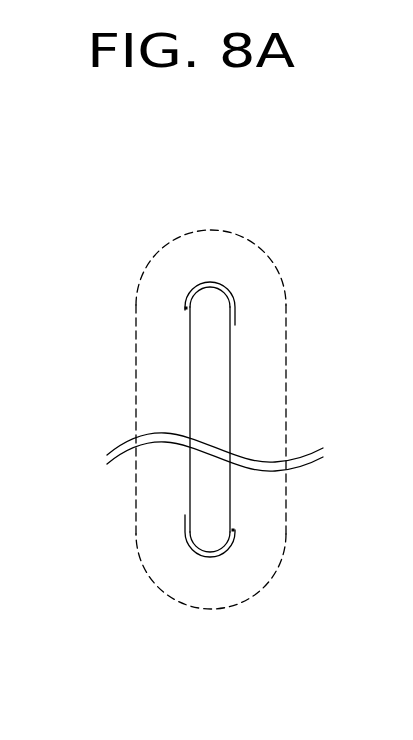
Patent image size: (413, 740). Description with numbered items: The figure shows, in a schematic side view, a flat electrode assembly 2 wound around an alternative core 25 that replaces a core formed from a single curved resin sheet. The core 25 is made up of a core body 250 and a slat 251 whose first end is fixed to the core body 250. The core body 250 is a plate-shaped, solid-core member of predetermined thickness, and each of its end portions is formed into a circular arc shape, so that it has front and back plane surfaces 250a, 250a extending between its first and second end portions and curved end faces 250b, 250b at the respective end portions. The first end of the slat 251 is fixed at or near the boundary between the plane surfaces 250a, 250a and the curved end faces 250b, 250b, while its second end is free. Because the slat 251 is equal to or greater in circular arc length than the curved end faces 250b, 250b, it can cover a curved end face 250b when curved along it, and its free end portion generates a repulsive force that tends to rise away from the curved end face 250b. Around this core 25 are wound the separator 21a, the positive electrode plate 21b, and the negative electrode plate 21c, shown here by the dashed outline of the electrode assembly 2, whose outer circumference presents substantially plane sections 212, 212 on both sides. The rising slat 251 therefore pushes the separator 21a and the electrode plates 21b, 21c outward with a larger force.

The electrode assembly 2 is at (218, 432).
The plane section 212 is at (136, 373).
The separator 21a is at (194, 616).
The positive electrode plate 21b is at (194, 616).
The negative electrode plate 21c is at (205, 590).
The core 25 is at (212, 411).
The core body 250 is at (212, 418).
The plane surface 250a is at (188, 480).
The curved end face 250b is at (195, 285).
The slat 251 is at (210, 280).